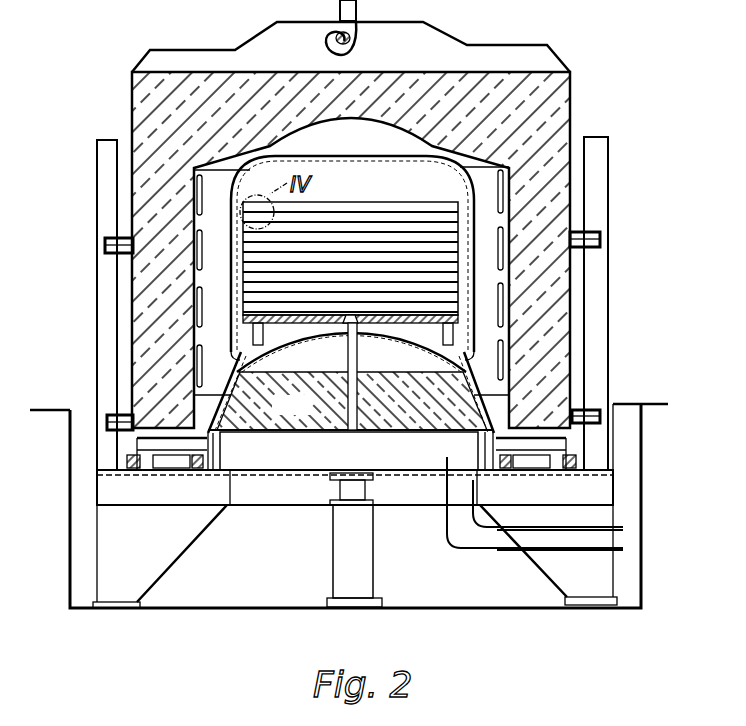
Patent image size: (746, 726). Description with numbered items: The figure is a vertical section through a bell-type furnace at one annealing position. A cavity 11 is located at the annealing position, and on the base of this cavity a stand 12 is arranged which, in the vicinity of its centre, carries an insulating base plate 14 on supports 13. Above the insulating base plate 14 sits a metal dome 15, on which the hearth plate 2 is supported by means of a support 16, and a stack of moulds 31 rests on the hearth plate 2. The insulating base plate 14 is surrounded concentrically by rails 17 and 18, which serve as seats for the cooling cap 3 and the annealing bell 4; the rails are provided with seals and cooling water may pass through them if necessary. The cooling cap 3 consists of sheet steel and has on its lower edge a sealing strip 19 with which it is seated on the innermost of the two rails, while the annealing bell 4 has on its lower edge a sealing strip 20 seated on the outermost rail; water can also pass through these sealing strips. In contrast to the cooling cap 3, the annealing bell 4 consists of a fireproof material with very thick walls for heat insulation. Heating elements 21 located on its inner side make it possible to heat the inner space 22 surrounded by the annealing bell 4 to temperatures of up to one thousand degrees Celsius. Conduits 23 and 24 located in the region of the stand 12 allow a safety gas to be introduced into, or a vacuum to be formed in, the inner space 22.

The hearth plate 2 is at (450, 297).
The cooling cap 3 is at (332, 158).
The annealing bell 4 is at (568, 100).
The cavity 11 is at (627, 415).
The stand 12 is at (177, 555).
The supports 13 is at (230, 443).
The insulating base plate 14 is at (351, 401).
The metal dome 15 is at (388, 335).
The support 16 is at (453, 334).
The rail 17 is at (180, 477).
The rail 18 is at (130, 477).
The sealing strip 19 is at (193, 433).
The sealing strip 20 is at (133, 445).
The heating elements 21 is at (203, 312).
The inner space 22 is at (242, 155).
The conduit 23 is at (502, 552).
The conduit 24 is at (577, 530).
The stack of moulds 31 is at (360, 213).